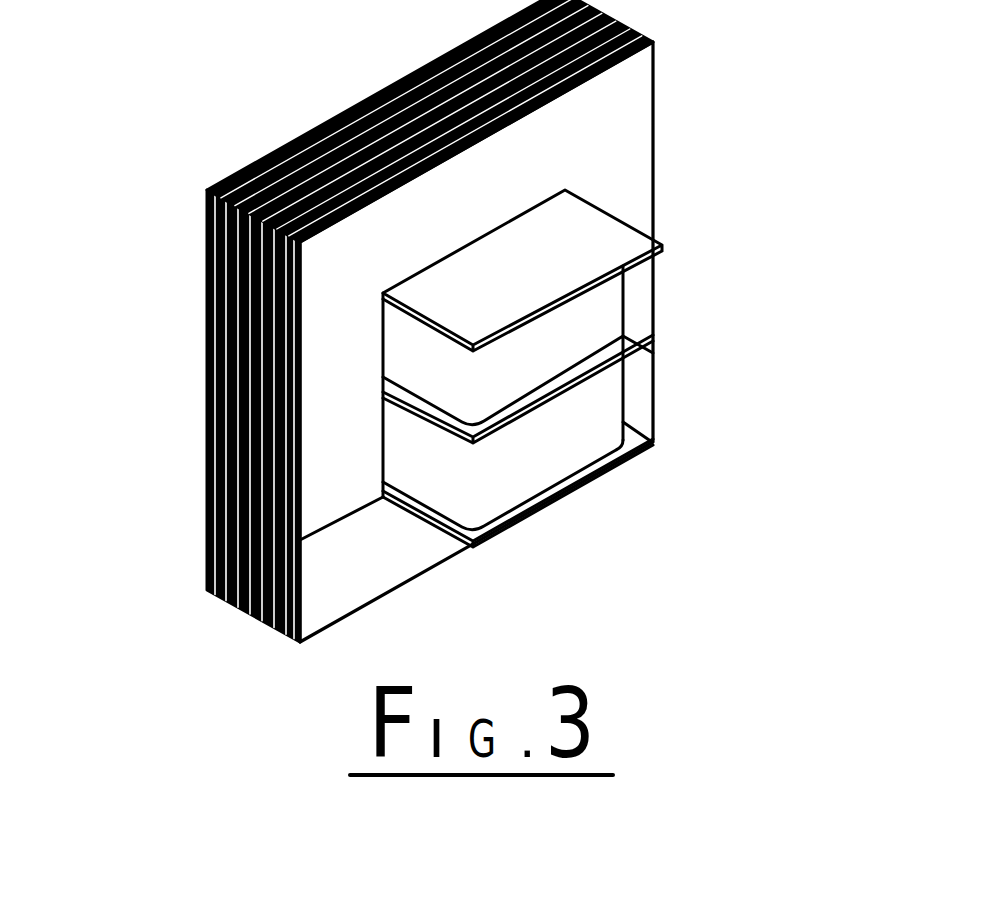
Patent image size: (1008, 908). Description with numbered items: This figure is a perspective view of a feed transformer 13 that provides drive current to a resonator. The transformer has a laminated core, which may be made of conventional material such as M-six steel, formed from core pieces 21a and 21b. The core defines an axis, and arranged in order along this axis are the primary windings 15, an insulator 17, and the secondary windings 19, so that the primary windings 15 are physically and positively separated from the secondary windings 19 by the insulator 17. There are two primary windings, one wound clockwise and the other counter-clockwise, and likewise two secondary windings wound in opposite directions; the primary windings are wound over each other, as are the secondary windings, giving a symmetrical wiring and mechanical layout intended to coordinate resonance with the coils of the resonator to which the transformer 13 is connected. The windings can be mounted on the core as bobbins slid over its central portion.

The feed transformer 13 is at (457, 369).
The primary windings 15 is at (593, 428).
The insulator 17 is at (617, 358).
The secondary windings 19 is at (595, 318).
The core piece 21a is at (617, 153).
The core piece 21b is at (365, 563).